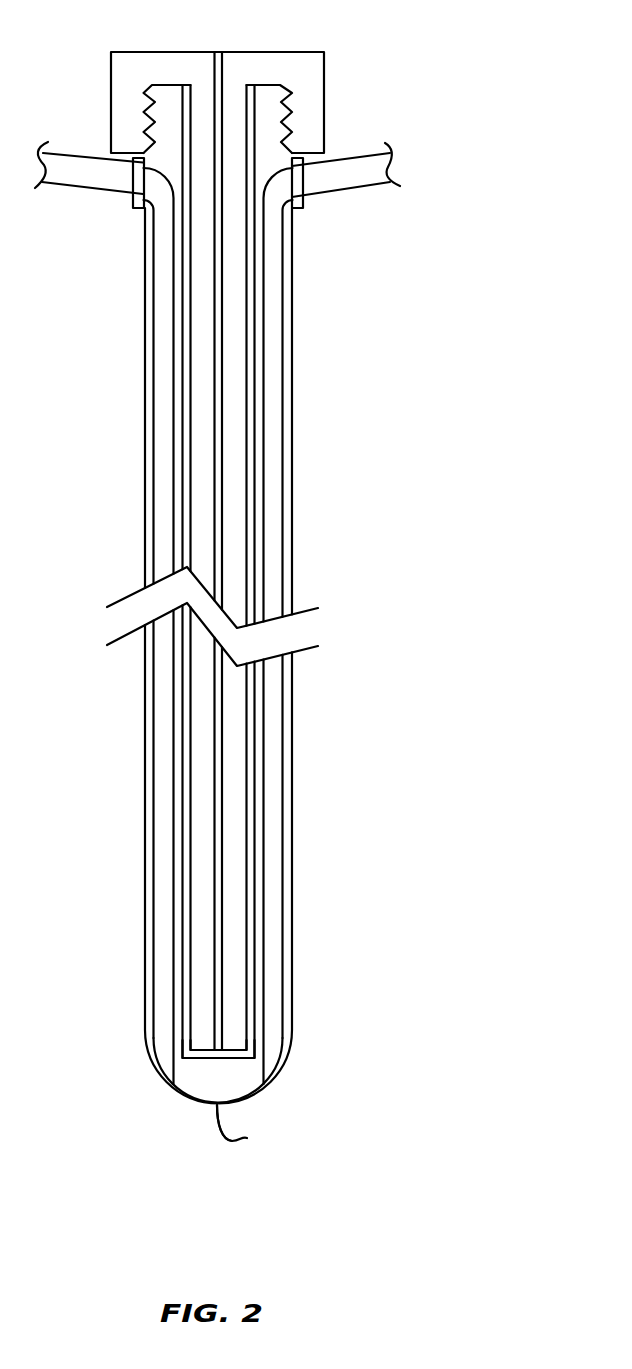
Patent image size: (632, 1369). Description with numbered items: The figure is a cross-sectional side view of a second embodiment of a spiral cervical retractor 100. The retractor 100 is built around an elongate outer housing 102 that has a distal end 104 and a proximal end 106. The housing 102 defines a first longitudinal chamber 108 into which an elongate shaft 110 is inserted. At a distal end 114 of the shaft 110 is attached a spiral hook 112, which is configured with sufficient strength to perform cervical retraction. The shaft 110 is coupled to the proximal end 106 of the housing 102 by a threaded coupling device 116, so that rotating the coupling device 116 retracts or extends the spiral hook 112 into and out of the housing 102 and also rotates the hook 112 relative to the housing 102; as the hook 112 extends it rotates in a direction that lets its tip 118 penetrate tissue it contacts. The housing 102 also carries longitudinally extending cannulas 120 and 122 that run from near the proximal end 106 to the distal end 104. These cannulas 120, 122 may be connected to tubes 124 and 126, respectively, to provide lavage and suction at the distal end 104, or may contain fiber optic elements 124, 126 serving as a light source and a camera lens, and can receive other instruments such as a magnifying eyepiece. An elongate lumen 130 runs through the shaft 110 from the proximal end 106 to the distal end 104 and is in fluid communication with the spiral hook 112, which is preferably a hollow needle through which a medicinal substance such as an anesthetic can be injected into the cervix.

The spiral cervical retractor 100 is at (441, 181).
The elongate outer housing 102 is at (292, 397).
The distal end 104 is at (267, 1080).
The proximal end 106 is at (265, 84).
The first longitudinal chamber 108 is at (257, 844).
The elongate shaft 110 is at (247, 492).
The spiral hook 112 is at (212, 1118).
The distal end 114 is at (248, 1017).
The threaded coupling device 116 is at (325, 80).
The tip 118 is at (247, 1138).
The cannula 120 is at (148, 340).
The cannula 122 is at (283, 313).
The tube 124 is at (57, 187).
The tube 126 is at (362, 184).
The elongate lumen 130 is at (225, 748).